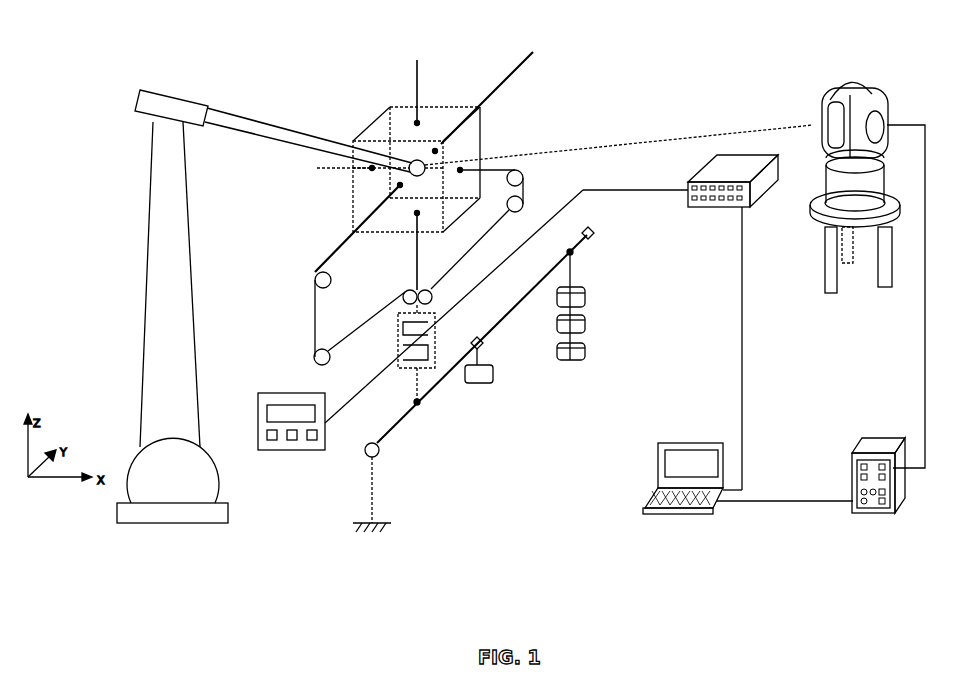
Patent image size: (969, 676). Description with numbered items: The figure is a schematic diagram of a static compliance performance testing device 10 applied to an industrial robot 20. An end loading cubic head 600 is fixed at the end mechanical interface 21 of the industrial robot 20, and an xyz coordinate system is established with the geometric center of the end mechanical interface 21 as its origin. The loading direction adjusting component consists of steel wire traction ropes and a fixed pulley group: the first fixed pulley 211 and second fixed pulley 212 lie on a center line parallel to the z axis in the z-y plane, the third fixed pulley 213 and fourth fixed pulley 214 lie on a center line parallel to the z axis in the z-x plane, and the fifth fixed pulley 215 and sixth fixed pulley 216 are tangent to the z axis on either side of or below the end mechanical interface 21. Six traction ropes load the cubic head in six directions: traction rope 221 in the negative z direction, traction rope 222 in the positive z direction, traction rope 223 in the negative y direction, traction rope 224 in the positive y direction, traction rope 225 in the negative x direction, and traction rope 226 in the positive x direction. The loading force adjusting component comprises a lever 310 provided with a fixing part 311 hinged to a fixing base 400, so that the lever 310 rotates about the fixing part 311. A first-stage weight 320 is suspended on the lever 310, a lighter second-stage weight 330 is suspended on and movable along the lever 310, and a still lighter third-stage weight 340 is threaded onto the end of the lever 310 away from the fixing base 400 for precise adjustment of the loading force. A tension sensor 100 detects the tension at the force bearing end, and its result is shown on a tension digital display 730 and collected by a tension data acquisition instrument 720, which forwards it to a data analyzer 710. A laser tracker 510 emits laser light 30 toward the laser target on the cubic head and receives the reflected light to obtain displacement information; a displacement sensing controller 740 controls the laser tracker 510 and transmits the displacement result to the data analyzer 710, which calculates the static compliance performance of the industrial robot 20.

The static compliance performance testing device 10 is at (95, 60).
The industrial robot 20 is at (173, 242).
The end mechanical interface 21 is at (423, 162).
The laser light 30 is at (687, 137).
The tension sensor 100 is at (422, 342).
The first fixed pulley 211 is at (315, 278).
The second fixed pulley 212 is at (314, 357).
The third fixed pulley 213 is at (523, 172).
The fourth fixed pulley 214 is at (523, 204).
The fifth fixed pulley 215 is at (397, 327).
The sixth fixed pulley 216 is at (433, 290).
The traction rope 221 is at (313, 331).
The traction rope 222 is at (415, 72).
The traction rope 223 is at (345, 240).
The traction rope 224 is at (527, 67).
The traction rope 225 is at (317, 170).
The traction rope 226 is at (505, 158).
The lever 310 is at (405, 418).
The fixing part 311 is at (379, 455).
The first-stage weight 320 is at (586, 322).
The second-stage weight 330 is at (494, 375).
The third-stage weight 340 is at (594, 238).
The fixing base 400 is at (371, 497).
The laser tracker 510 is at (860, 72).
The end loading cubic head 600 is at (380, 130).
The data analyzer 710 is at (643, 507).
The tension data acquisition instrument 720 is at (708, 208).
The tension digital display 730 is at (291, 441).
The displacement sensing controller 740 is at (872, 497).